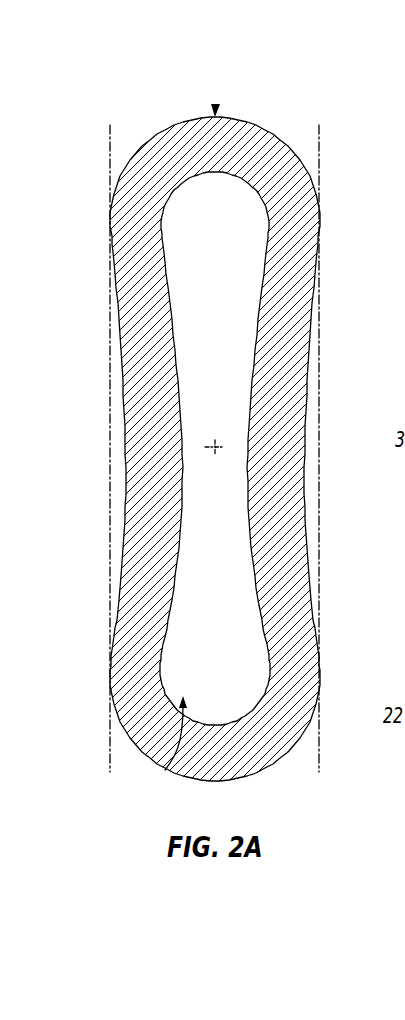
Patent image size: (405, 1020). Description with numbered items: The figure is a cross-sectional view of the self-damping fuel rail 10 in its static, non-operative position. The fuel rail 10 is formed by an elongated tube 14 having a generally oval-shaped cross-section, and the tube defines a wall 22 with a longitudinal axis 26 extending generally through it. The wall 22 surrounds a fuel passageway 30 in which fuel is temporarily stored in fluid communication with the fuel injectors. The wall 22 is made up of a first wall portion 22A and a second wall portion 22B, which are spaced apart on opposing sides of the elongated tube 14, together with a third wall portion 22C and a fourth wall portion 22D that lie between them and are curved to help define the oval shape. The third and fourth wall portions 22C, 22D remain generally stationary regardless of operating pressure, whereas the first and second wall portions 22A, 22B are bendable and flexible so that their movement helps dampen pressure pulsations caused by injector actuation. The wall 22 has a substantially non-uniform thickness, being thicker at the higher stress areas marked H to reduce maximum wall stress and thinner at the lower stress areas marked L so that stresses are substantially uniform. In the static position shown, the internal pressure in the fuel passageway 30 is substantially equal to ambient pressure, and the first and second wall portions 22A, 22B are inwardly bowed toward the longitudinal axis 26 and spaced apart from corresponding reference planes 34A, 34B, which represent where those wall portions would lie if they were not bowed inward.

The self-damping fuel rail 10 is at (202, 409).
The elongated tube 14 is at (238, 91).
The wall 22 is at (202, 445).
The first wall portion 22A is at (202, 445).
The second wall portion 22B is at (202, 445).
The third wall portion 22C is at (202, 435).
The fourth wall portion 22D is at (202, 455).
The longitudinal axis 26 is at (223, 474).
The fuel passageway 30 is at (160, 752).
The reference plane 34A is at (81, 448).
The reference plane 34B is at (353, 448).